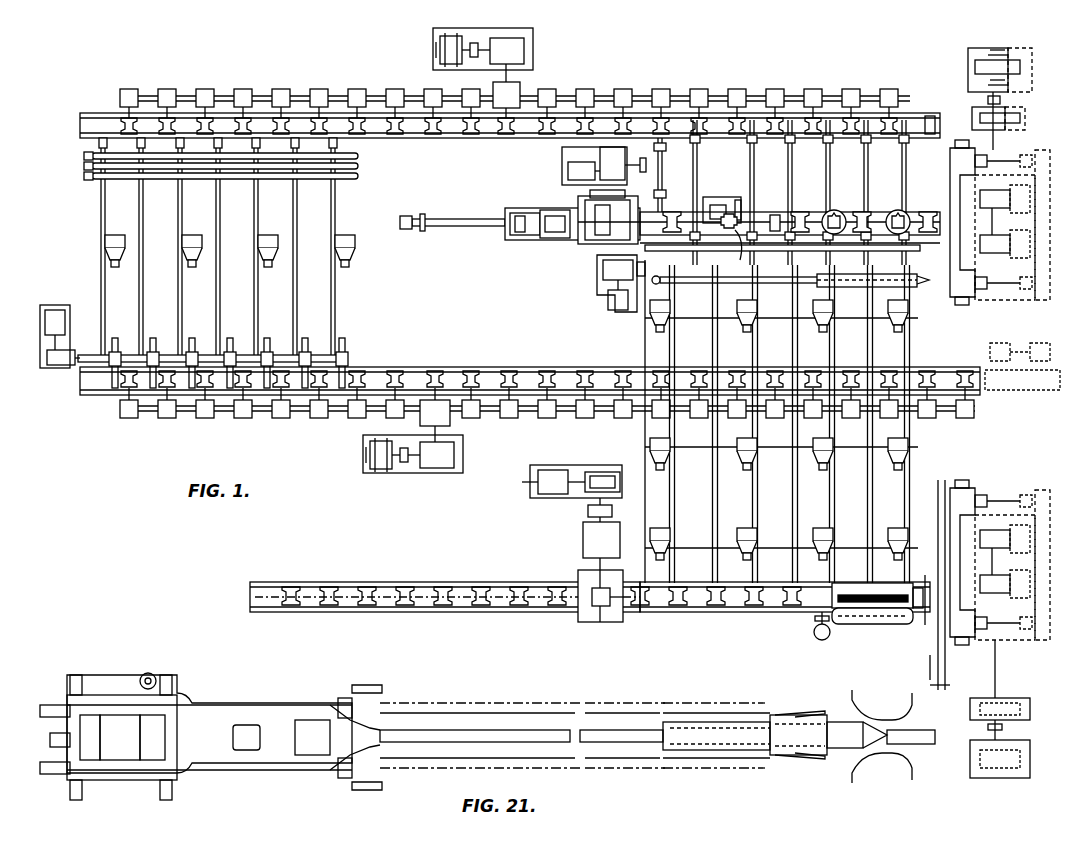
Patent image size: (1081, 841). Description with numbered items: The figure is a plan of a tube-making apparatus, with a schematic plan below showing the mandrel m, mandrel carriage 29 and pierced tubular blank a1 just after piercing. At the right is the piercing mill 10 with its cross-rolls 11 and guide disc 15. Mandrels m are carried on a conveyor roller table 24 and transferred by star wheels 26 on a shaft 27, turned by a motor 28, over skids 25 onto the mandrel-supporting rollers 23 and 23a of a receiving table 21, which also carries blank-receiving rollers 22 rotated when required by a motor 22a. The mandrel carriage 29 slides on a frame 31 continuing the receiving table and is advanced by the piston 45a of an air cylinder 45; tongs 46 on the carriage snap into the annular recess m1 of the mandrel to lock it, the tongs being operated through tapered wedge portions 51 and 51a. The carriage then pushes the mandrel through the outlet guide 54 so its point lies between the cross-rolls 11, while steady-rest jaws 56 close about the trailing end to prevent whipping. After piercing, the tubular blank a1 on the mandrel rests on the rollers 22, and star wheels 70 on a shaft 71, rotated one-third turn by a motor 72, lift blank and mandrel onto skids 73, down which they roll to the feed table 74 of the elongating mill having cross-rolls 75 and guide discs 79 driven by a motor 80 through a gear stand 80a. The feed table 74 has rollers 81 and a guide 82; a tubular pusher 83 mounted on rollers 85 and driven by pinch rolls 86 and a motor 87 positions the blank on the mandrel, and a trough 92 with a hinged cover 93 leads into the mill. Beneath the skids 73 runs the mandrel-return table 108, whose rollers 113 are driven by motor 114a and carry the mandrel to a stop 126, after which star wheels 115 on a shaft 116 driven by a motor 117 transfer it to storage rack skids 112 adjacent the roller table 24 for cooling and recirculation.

In FIG. 1, the piercing mill 10 is at (965, 185).
In FIG. 1, the cross-rolls 11 is at (1010, 260).
In FIG. 21, the cross-rolls 11 is at (870, 700).
In FIG. 1, the guide disc 15 is at (1010, 235).
In FIG. 1, the receiving table 21 is at (830, 210).
In FIG. 1, the blank-receiving rollers 22 is at (752, 212).
In FIG. 1, the motor 22a is at (745, 196).
In FIG. 1, the mandrel-supporting rollers 23 is at (738, 222).
In FIG. 1, the mandrel-supporting rollers 23a is at (898, 210).
In FIG. 1, the conveyor roller table 24 is at (592, 110).
In FIG. 1, the skids 25 is at (674, 175).
In FIG. 1, the transfer star wheels 26 is at (720, 118).
In FIG. 1, the shaft 27 is at (905, 150).
In FIG. 1, the motor 28 is at (562, 170).
In FIG. 1, the mandrel carriage 29 is at (575, 240).
In FIG. 21, the mandrel carriage 29 is at (215, 730).
In FIG. 1, the frame 31 is at (664, 212).
In FIG. 1, the air cylinder 45 is at (447, 219).
In FIG. 1, the piston 45a is at (525, 240).
In FIG. 21, the piston 45a is at (60, 740).
In FIG. 1, the tongs 46 is at (630, 210).
In FIG. 21, the tongs 46 is at (355, 700).
In FIG. 1, the wedge portions 51 is at (725, 240).
In FIG. 1, the wedge portions 51a is at (660, 244).
In FIG. 1, the outlet guide 54 is at (950, 230).
In FIG. 21, the outlet guide 54 is at (785, 715).
In FIG. 1, the jaws 56 is at (775, 232).
In FIG. 1, the star wheels 70 is at (855, 252).
In FIG. 1, the shaft 71 is at (742, 244).
In FIG. 1, the motor 72 is at (605, 300).
In FIG. 1, the skids 73 is at (678, 362).
In FIG. 1, the feed table 74 is at (660, 612).
In FIG. 1, the cross-rolls 75 is at (990, 585).
In FIG. 1, the guide discs 79 is at (975, 595).
In FIG. 1, the motor 80 is at (978, 760).
In FIG. 1, the gear stand 80a is at (970, 712).
In FIG. 1, the rollers 81 is at (760, 602).
In FIG. 1, the guide 82 is at (920, 605).
In FIG. 1, the tubular pusher 83 is at (545, 590).
In FIG. 1, the rollers 85 is at (300, 590).
In FIG. 1, the pinch rolls 86 is at (605, 610).
In FIG. 1, the motor 87 is at (555, 480).
In FIG. 1, the trough 92 is at (865, 590).
In FIG. 1, the hinged cover 93 is at (858, 625).
In FIG. 1, the mandrel-return table 108 is at (490, 368).
In FIG. 1, the skids 112 is at (140, 322).
In FIG. 1, the rollers 113 is at (405, 380).
In FIG. 1, the motor 114a is at (380, 460).
In FIG. 1, the star wheels 115 is at (228, 340).
In FIG. 1, the shaft 116 is at (345, 358).
In FIG. 1, the motor 117 is at (48, 318).
In FIG. 1, the stop 126 is at (78, 392).
In FIG. 1, the mandrel m is at (360, 156).
In FIG. 21, the mandrel m is at (480, 736).
In FIG. 1, the annular recess m1 is at (92, 180).
In FIG. 1, the tubular blank a1 is at (838, 282).
In FIG. 21, the tubular blank a1 is at (715, 722).